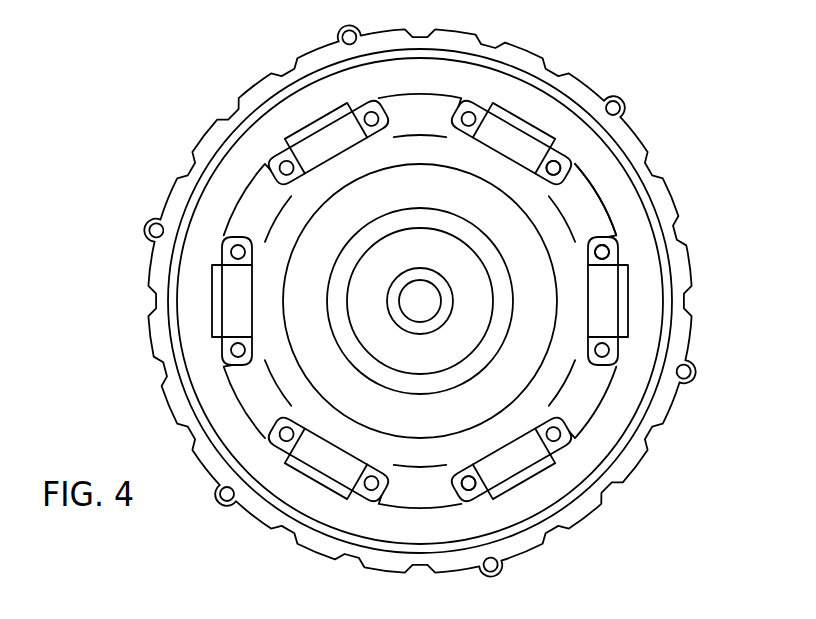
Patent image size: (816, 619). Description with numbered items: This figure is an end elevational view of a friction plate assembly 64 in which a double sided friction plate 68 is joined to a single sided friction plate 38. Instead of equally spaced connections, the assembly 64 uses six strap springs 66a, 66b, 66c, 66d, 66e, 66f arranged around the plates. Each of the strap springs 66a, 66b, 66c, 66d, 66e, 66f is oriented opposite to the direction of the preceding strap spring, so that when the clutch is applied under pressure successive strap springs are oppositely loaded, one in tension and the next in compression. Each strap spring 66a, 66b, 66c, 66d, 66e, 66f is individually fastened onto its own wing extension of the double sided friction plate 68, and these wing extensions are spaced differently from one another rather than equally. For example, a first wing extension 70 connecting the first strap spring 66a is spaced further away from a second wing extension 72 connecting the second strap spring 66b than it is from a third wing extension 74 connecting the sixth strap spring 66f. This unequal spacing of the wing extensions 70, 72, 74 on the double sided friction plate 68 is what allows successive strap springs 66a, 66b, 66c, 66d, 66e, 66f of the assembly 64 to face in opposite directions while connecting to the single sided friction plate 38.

The assembly 64 is at (629, 71).
The single sided friction plate 38 is at (630, 138).
The double sided friction plate 68 is at (603, 214).
The first wing extension 70 is at (612, 247).
The second wing extension 72 is at (478, 490).
The third wing extension 74 is at (558, 158).
The first strap spring 66a is at (607, 324).
The second strap spring 66b is at (528, 455).
The strap spring 66c is at (338, 468).
The strap spring 66d is at (237, 313).
The strap spring 66e is at (323, 138).
The sixth strap spring 66f is at (502, 133).